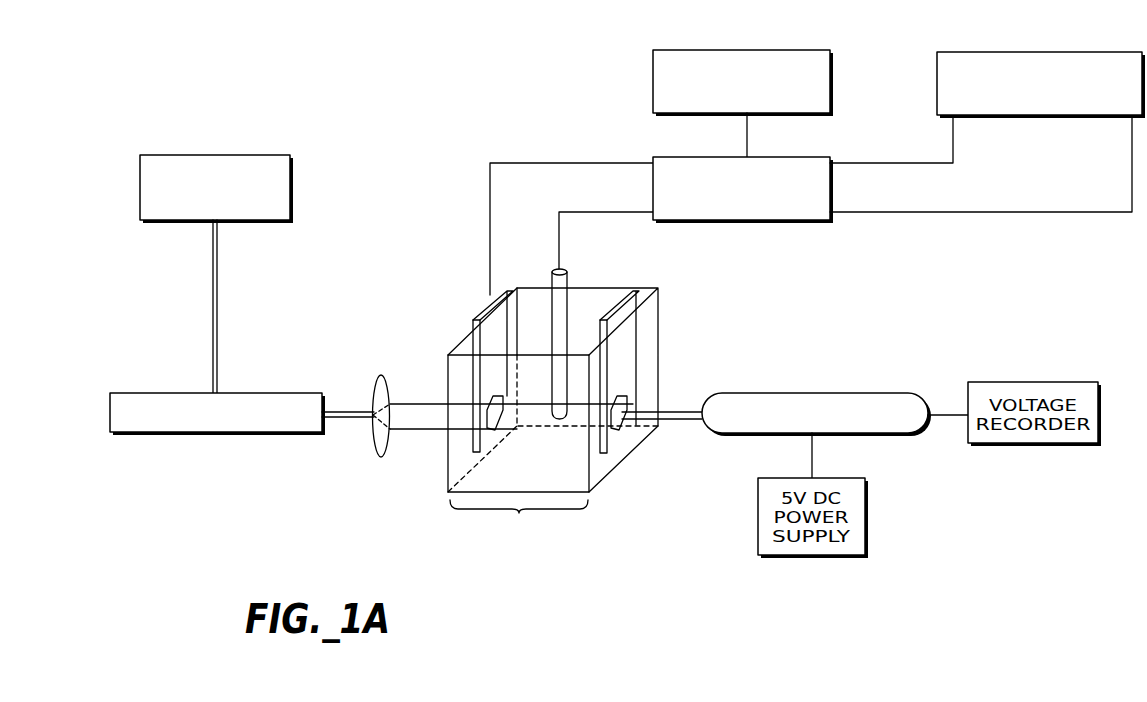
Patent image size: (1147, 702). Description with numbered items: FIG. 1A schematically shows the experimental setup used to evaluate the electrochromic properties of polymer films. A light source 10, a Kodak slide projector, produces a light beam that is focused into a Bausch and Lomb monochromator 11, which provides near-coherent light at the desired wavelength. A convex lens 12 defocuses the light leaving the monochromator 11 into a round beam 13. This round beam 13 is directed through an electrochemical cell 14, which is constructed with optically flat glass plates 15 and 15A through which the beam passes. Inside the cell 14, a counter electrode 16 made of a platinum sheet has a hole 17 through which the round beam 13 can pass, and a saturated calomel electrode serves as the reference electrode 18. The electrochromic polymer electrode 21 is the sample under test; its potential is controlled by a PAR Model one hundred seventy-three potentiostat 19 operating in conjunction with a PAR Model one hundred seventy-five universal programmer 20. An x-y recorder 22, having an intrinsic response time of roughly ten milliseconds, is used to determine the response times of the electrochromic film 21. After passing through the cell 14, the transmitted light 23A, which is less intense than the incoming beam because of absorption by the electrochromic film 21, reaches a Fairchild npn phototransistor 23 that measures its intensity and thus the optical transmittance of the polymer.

The light source 10 is at (245, 155).
The monochromator 11 is at (258, 393).
The convex lens 12 is at (387, 380).
The round beam 13 is at (400, 430).
The electrochemical cell 14 is at (519, 521).
The optically flat glass plate 15 is at (448, 480).
The optically flat glass plate 15A is at (606, 472).
The counter electrode 16 is at (482, 310).
The hole 17 is at (497, 428).
The reference electrode 18 is at (556, 268).
The potentiostat 19 is at (787, 157).
The universal programmer 20 is at (760, 50).
The polymer electrode 21 is at (625, 432).
The x-y recorder 22 is at (1093, 52).
The phototransistor 23 is at (860, 393).
The transmitted light 23A is at (668, 420).